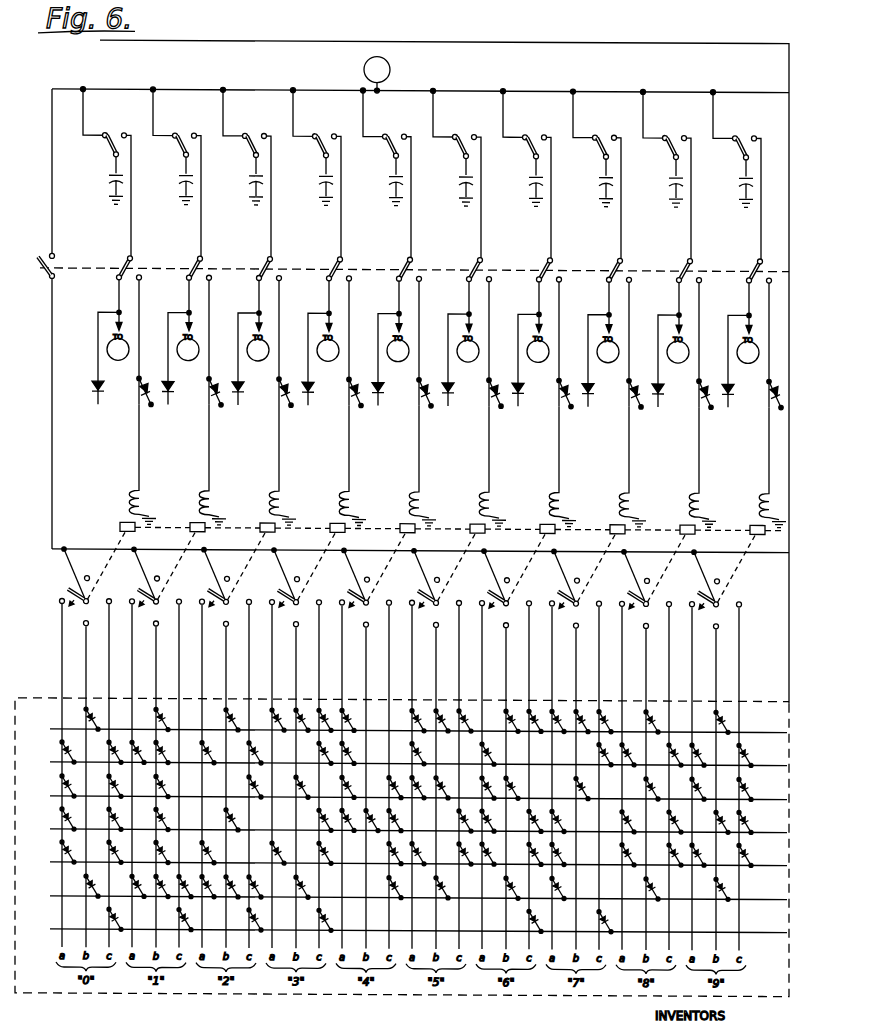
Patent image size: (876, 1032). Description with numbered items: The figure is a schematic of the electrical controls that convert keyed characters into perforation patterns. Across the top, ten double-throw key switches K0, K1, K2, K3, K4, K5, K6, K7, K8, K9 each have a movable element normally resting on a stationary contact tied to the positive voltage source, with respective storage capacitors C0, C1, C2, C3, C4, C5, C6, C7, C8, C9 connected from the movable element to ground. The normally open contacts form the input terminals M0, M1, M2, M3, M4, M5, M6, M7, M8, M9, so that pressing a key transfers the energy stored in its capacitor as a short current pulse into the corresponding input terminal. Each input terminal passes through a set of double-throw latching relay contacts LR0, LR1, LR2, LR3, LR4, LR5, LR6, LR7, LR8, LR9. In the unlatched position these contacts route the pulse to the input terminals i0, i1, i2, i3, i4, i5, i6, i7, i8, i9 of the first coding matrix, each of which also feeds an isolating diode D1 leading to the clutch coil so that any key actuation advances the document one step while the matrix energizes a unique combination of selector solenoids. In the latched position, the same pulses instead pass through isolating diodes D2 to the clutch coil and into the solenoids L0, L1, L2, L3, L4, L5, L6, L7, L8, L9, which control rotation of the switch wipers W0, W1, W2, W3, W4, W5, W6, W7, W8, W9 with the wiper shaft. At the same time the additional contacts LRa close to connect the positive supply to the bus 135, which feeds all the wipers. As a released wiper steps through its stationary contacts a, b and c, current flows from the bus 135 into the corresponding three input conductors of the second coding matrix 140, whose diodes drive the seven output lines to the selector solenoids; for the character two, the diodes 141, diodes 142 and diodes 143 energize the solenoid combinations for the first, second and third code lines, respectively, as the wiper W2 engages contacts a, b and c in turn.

The bus 135 is at (84, 549).
The second coding matrix 140 is at (245, 1003).
The diodes 141 is at (207, 750).
The diodes 142 is at (231, 717).
The diodes 143 is at (254, 750).
The latching relay contacts LRa is at (36, 264).
The isolating diode D1 is at (92, 384).
The isolating diodes D2 is at (152, 380).
The input terminal M0 is at (107, 173).
The input terminal M1 is at (177, 173).
The input terminal M2 is at (247, 174).
The input terminal M3 is at (317, 174).
The input terminal M4 is at (387, 175).
The input terminal M5 is at (457, 175).
The input terminal M6 is at (527, 175).
The input terminal M7 is at (597, 176).
The input terminal M8 is at (667, 176).
The input terminal M9 is at (737, 176).
The key switch K0 is at (94, 147).
The key switch K1 is at (164, 147).
The key switch K2 is at (234, 148).
The key switch K3 is at (304, 148).
The key switch K4 is at (374, 148).
The key switch K5 is at (444, 149).
The key switch K6 is at (514, 149).
The key switch K7 is at (584, 149).
The key switch K8 is at (654, 150).
The key switch K9 is at (724, 150).
The capacitor C0 is at (96, 180).
The capacitor C1 is at (166, 180).
The capacitor C2 is at (236, 181).
The capacitor C3 is at (306, 181).
The capacitor C4 is at (376, 181).
The capacitor C5 is at (446, 182).
The capacitor C6 is at (516, 182).
The capacitor C7 is at (586, 182).
The capacitor C8 is at (656, 183).
The capacitor C9 is at (726, 183).
The double-throw switch contacts LR0 is at (107, 257).
The double-throw switch contacts LR1 is at (177, 257).
The double-throw switch contacts LR2 is at (247, 258).
The double-throw switch contacts LR3 is at (317, 258).
The double-throw switch contacts LR4 is at (387, 258).
The double-throw switch contacts LR5 is at (457, 259).
The double-throw switch contacts LR6 is at (527, 259).
The double-throw switch contacts LR7 is at (597, 260).
The double-throw switch contacts LR8 is at (667, 260).
The double-throw switch contacts LR9 is at (737, 260).
The input terminal i0 is at (113, 341).
The input terminal i1 is at (183, 342).
The input terminal i2 is at (253, 342).
The input terminal i3 is at (323, 342).
The input terminal i4 is at (393, 343).
The input terminal i5 is at (463, 343).
The input terminal i6 is at (533, 343).
The input terminal i7 is at (603, 344).
The input terminal i8 is at (673, 344).
The input terminal i9 is at (743, 344).
The solenoid L0 is at (121, 502).
The solenoid L1 is at (191, 502).
The solenoid L2 is at (261, 503).
The solenoid L3 is at (331, 503).
The solenoid L4 is at (401, 504).
The solenoid L5 is at (471, 504).
The solenoid L6 is at (541, 504).
The solenoid L7 is at (611, 505).
The solenoid L8 is at (681, 505).
The solenoid L9 is at (751, 505).
The switch wiper W0 is at (58, 577).
The switch wiper W1 is at (128, 577).
The switch wiper W2 is at (198, 577).
The switch wiper W3 is at (268, 578).
The switch wiper W4 is at (338, 578).
The switch wiper W5 is at (408, 578).
The switch wiper W6 is at (478, 579).
The switch wiper W7 is at (548, 579).
The switch wiper W8 is at (618, 579).
The switch wiper W9 is at (688, 580).